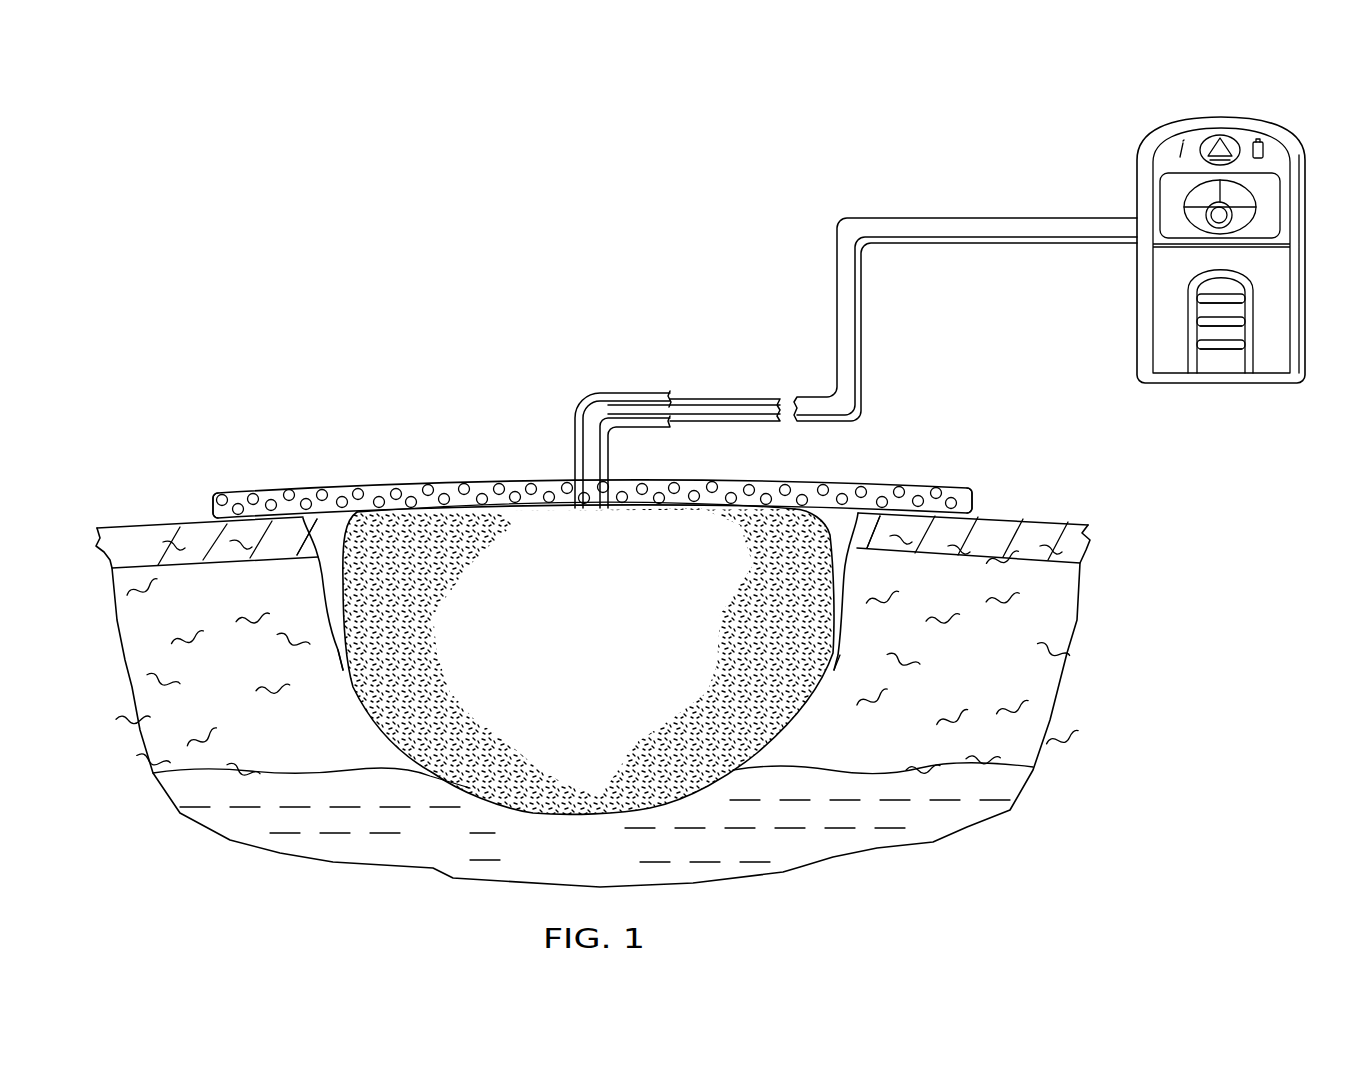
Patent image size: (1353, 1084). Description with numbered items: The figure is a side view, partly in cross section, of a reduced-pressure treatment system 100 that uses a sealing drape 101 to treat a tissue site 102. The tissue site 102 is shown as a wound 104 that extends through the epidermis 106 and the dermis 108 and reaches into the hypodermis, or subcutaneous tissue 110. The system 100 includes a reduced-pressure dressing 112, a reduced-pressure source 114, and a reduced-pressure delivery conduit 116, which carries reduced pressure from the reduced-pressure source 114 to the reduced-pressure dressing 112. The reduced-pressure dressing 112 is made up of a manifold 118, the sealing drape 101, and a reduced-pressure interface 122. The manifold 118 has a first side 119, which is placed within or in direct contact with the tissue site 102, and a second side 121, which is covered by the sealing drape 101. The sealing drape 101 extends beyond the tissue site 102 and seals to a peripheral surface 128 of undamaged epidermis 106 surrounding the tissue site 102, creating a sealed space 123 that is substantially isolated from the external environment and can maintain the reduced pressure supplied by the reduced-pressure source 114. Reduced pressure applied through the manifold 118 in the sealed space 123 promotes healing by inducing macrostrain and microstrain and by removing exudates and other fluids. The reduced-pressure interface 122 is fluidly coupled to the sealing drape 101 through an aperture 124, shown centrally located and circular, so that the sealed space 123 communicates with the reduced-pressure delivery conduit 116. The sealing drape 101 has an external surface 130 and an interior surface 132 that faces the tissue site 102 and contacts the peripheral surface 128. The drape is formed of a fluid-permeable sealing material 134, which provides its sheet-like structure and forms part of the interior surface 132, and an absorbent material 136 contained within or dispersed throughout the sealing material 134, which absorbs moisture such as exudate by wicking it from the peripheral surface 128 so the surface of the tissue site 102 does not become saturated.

The reduced-pressure treatment system 100 is at (476, 260).
The sealing drape 101 is at (420, 476).
The tissue site 102 is at (818, 722).
The wound 104 is at (368, 703).
The epidermis 106 is at (1047, 513).
The dermis 108 is at (262, 725).
The subcutaneous tissue 110 is at (613, 855).
The reduced-pressure dressing 112 is at (868, 455).
The reduced-pressure source 114 is at (1232, 111).
The reduced-pressure delivery conduit 116 is at (835, 312).
The manifold 118 is at (612, 650).
The first side 119 is at (472, 787).
The second side 121 is at (372, 498).
The reduced-pressure interface 122 is at (576, 391).
The sealed space 123 is at (328, 543).
The aperture 124 is at (615, 483).
The peripheral surface 128 is at (236, 510).
The external surface 130 is at (263, 492).
The interior surface 132 is at (462, 505).
The sealing material 134 is at (213, 503).
The absorbent material 136 is at (233, 492).